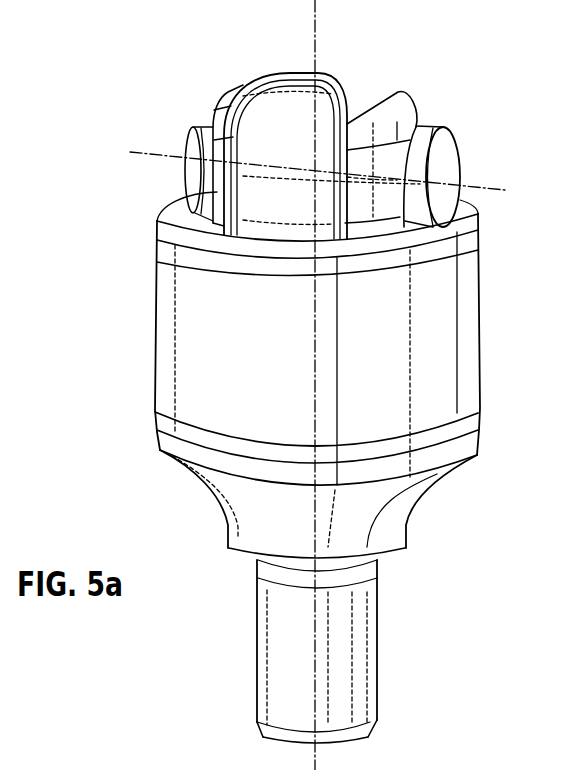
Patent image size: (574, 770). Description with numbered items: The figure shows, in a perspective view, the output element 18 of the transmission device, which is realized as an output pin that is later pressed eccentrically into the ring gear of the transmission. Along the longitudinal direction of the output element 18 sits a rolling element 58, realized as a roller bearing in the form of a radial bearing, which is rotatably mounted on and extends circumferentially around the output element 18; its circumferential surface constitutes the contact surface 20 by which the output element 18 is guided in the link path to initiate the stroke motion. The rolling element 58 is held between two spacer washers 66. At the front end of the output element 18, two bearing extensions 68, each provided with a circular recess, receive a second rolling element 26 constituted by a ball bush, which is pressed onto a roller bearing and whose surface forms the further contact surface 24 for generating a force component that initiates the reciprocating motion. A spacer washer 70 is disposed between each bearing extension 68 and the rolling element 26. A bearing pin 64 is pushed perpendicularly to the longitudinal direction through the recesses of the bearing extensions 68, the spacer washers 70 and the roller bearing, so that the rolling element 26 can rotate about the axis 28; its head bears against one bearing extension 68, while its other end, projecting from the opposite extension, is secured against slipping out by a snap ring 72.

The output element 18 is at (345, 655).
The contact surface 20 is at (150, 311).
The further contact surface 24 is at (337, 71).
The rolling element 26 is at (290, 103).
The axis 28 is at (170, 153).
The rolling element 58 is at (440, 332).
The bearing pin 64 is at (448, 164).
The spacer washers 66 is at (448, 250).
The bearing extensions 68 is at (228, 96).
The spacer washer 70 is at (253, 82).
The snap ring 72 is at (192, 184).